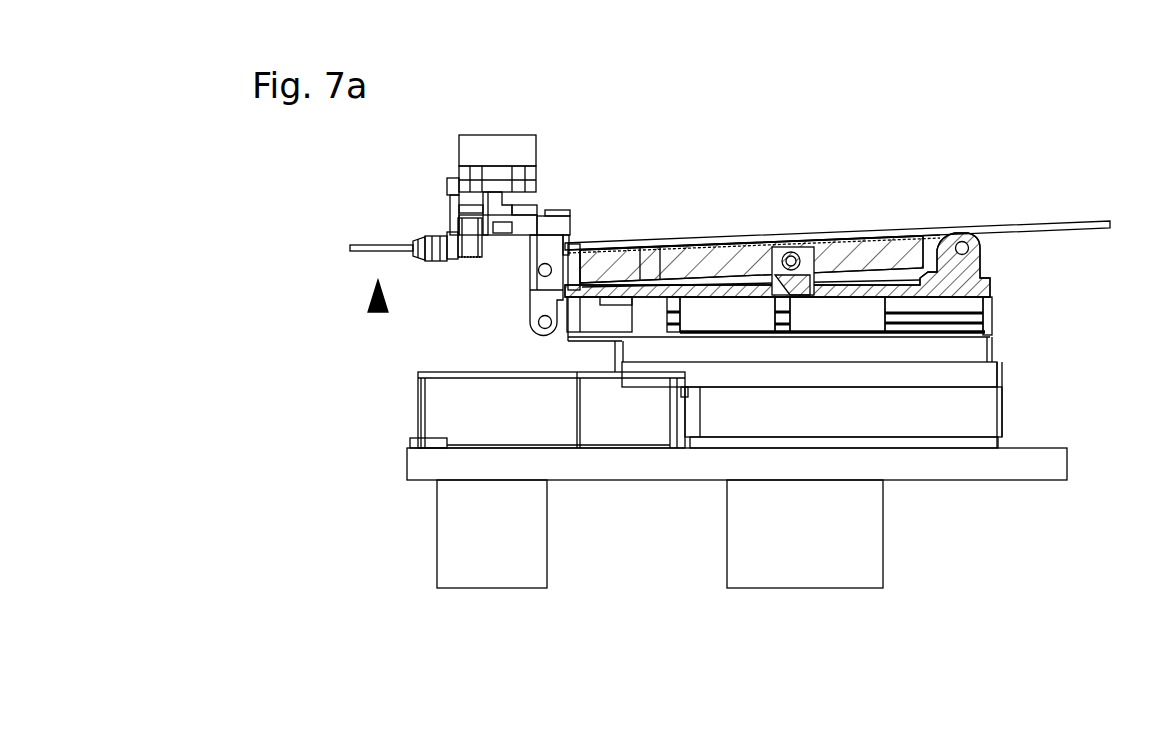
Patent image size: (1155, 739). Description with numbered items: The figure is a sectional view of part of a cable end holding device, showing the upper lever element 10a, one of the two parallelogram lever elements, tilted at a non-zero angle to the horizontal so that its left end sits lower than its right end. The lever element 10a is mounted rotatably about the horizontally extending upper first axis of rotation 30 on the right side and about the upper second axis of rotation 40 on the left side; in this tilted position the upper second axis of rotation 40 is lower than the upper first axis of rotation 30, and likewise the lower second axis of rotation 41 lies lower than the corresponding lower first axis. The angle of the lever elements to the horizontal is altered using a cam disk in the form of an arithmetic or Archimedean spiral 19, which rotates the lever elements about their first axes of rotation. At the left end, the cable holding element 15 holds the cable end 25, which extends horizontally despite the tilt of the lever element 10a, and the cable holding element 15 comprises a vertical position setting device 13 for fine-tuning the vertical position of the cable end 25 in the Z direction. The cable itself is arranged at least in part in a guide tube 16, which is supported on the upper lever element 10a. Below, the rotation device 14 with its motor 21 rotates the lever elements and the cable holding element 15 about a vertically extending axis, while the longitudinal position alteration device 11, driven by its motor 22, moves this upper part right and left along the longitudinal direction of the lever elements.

The upper lever element 10a is at (885, 242).
The longitudinal position alteration device 11 is at (990, 303).
The vertical position setting device 13 is at (556, 214).
The rotation device 14 is at (957, 420).
The cable holding element 15 is at (468, 247).
The guide tube 16 is at (1097, 228).
The Archimedean spiral 19 is at (800, 268).
The motor 21 is at (502, 582).
The motor 22 is at (835, 582).
The cable end 25 is at (377, 312).
The upper first axis of rotation 30 is at (969, 249).
The upper second axis of rotation 40 is at (553, 264).
The lower second axis of rotation 41 is at (537, 322).